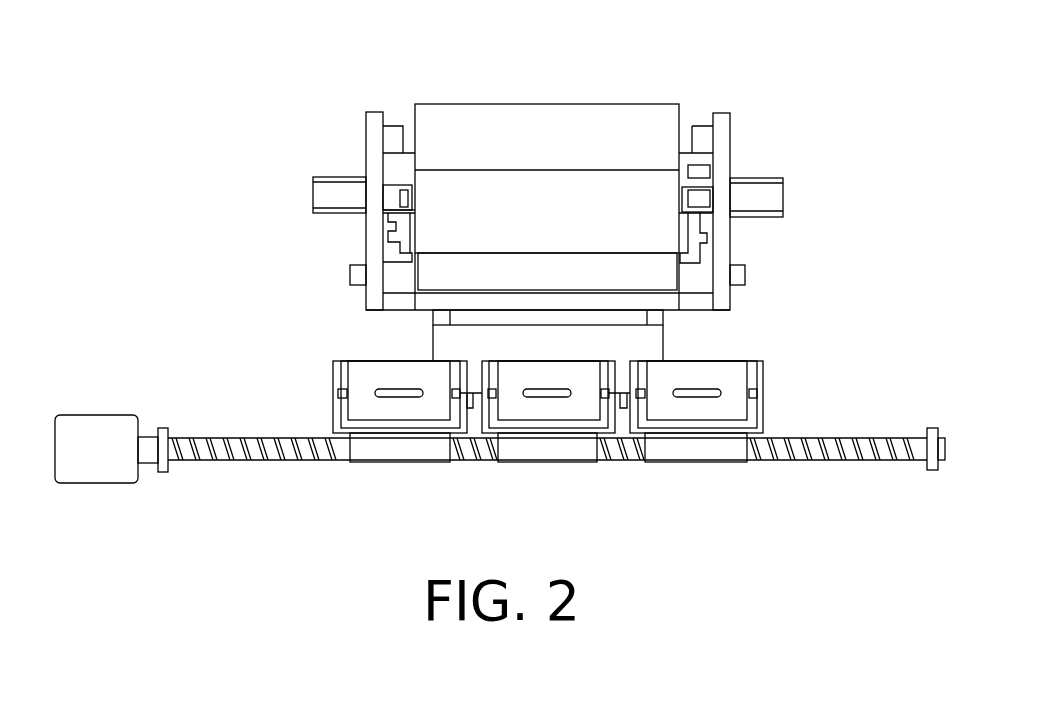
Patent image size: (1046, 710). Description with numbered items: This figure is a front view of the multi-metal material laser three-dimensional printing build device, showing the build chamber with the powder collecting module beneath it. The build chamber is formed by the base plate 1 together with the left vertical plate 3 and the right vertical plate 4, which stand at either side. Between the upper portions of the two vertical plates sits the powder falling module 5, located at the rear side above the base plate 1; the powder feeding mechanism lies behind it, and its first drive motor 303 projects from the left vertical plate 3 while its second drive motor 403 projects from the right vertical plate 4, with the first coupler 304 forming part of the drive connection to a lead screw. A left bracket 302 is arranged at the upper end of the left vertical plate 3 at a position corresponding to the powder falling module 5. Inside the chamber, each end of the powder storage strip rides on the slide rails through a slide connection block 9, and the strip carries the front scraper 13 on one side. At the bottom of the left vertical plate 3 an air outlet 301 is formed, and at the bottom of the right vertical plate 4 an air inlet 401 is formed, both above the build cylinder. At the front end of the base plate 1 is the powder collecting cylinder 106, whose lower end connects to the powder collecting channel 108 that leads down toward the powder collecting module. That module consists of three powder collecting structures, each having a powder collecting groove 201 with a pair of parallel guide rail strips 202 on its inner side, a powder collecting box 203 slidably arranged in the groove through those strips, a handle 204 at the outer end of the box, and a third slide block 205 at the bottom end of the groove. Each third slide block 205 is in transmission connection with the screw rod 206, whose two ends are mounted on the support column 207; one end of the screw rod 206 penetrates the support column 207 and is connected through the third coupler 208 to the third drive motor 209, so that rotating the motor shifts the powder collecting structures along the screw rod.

The base plate 1 is at (692, 300).
The left vertical plate 3 is at (370, 155).
The right vertical plate 4 is at (720, 132).
The powder falling module 5 is at (542, 98).
The slide connection block 9 is at (402, 263).
The front scraper 13 is at (604, 265).
The powder collecting cylinder 106 is at (570, 327).
The powder collecting channel 108 is at (608, 345).
The powder collecting groove 201 is at (333, 427).
The guide rail strip 202 is at (337, 398).
The powder collecting box 203 is at (455, 417).
The handle 204 is at (405, 397).
The third slide block 205 is at (402, 449).
The screw rod 206 is at (843, 443).
The support column 207 is at (167, 432).
The third coupler 208 is at (148, 440).
The third drive motor 209 is at (70, 425).
The air outlet 301 is at (355, 274).
The left bracket 302 is at (392, 133).
The first drive motor 303 is at (322, 192).
The first coupler 304 is at (392, 200).
The air inlet 401 is at (747, 275).
The second drive motor 403 is at (770, 197).